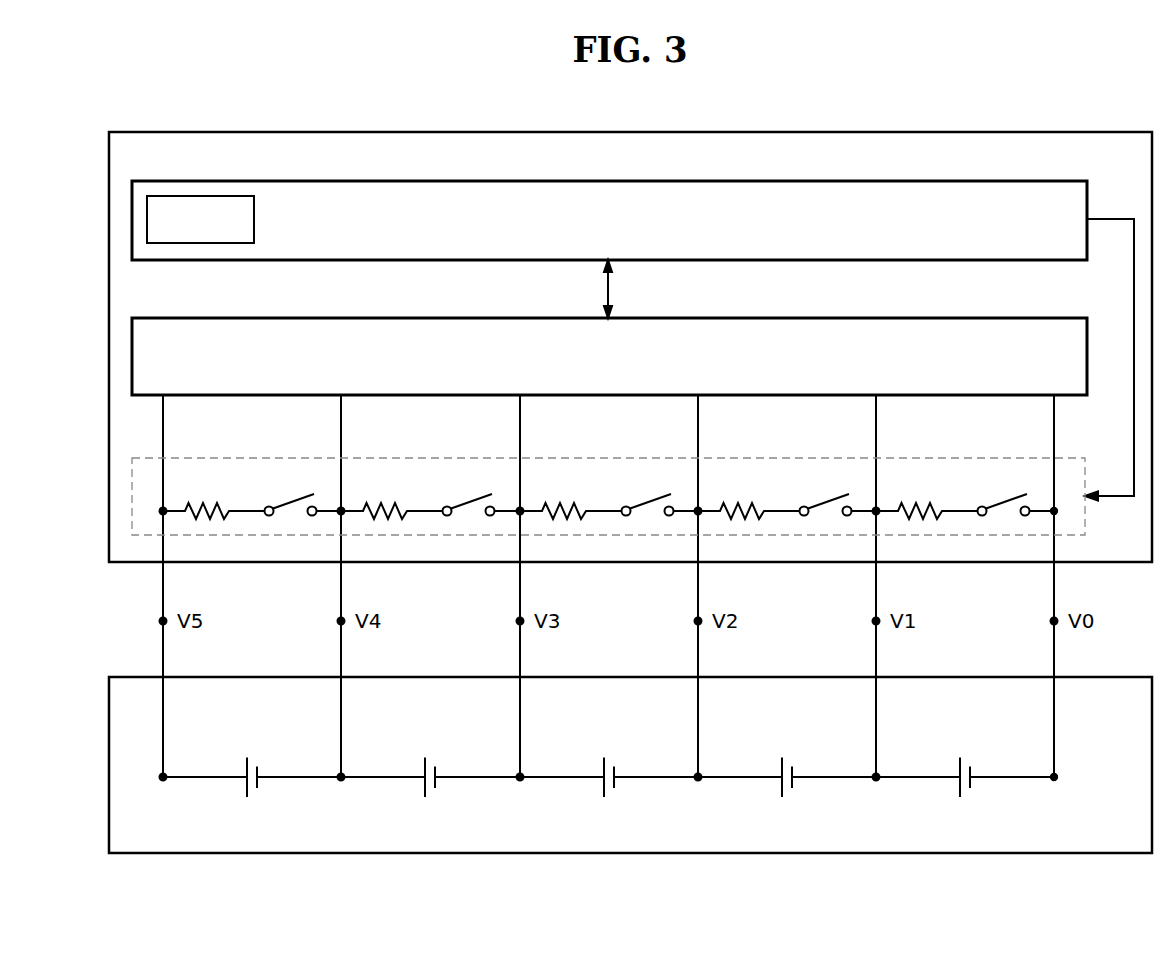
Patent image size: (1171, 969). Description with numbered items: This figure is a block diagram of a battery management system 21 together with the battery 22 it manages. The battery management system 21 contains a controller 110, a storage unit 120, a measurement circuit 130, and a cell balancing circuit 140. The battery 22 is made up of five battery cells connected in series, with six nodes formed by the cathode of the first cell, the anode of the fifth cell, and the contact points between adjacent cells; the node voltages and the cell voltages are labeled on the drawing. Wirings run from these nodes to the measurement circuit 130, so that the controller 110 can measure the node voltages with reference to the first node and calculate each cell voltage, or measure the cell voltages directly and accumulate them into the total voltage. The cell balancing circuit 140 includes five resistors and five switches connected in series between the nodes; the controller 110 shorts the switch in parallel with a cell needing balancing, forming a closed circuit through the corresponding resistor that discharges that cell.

The battery management system 21 is at (1077, 132).
The controller 110 is at (1023, 181).
The storage unit 120 is at (254, 219).
The measurement circuit 130 is at (1023, 318).
The cell balancing circuit 140 is at (978, 458).
The battery 22 is at (1077, 677).